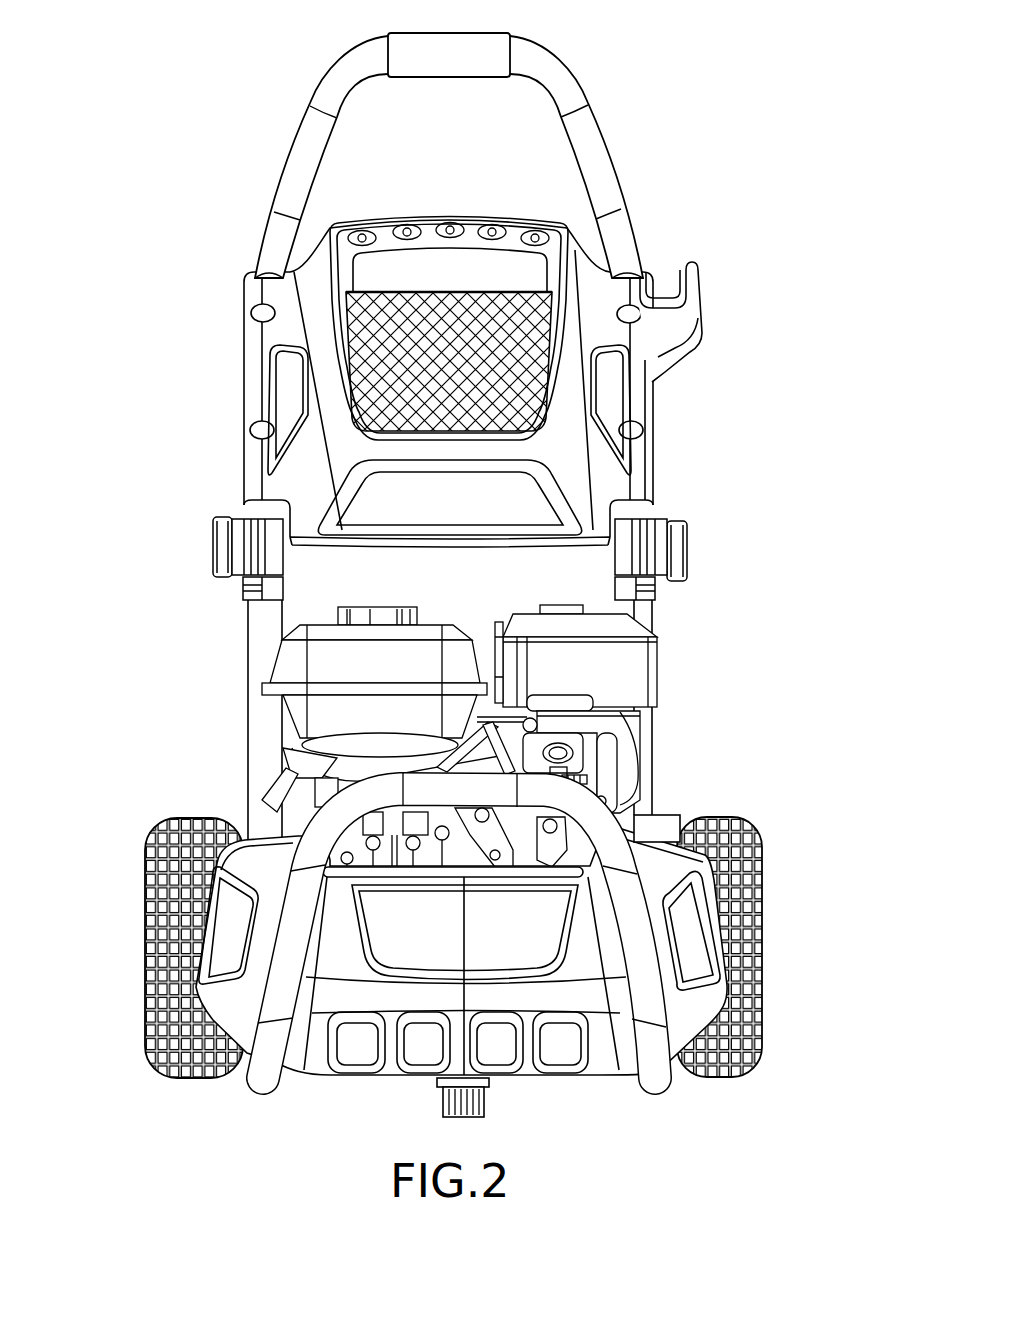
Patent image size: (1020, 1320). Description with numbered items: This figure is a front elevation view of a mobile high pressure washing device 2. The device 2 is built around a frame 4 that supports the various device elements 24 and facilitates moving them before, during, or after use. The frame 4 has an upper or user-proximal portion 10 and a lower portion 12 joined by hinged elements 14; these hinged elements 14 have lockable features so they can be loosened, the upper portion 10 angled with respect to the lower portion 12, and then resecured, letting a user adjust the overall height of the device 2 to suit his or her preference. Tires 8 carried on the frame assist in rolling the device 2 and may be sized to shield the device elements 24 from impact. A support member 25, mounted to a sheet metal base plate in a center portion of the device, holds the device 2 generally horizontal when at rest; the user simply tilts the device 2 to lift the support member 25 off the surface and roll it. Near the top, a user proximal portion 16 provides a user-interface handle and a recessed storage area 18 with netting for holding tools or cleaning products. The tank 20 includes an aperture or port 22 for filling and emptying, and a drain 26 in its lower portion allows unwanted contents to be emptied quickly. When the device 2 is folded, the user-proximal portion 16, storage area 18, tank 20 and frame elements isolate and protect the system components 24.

The mobile high pressure washing device 2 is at (122, 285).
The frame 4 is at (247, 712).
The tires 8 is at (150, 846).
The upper portion of the frame 10 is at (571, 80).
The lower portion of the frame 12 is at (276, 1076).
The hinged elements 14 is at (214, 555).
The user proximal portion 16 is at (622, 488).
The storage area 18 is at (430, 300).
The tank 20 is at (510, 1060).
The port 22 is at (670, 812).
The device elements 24 is at (703, 686).
The support member 25 is at (444, 1117).
The drain 26 is at (684, 293).